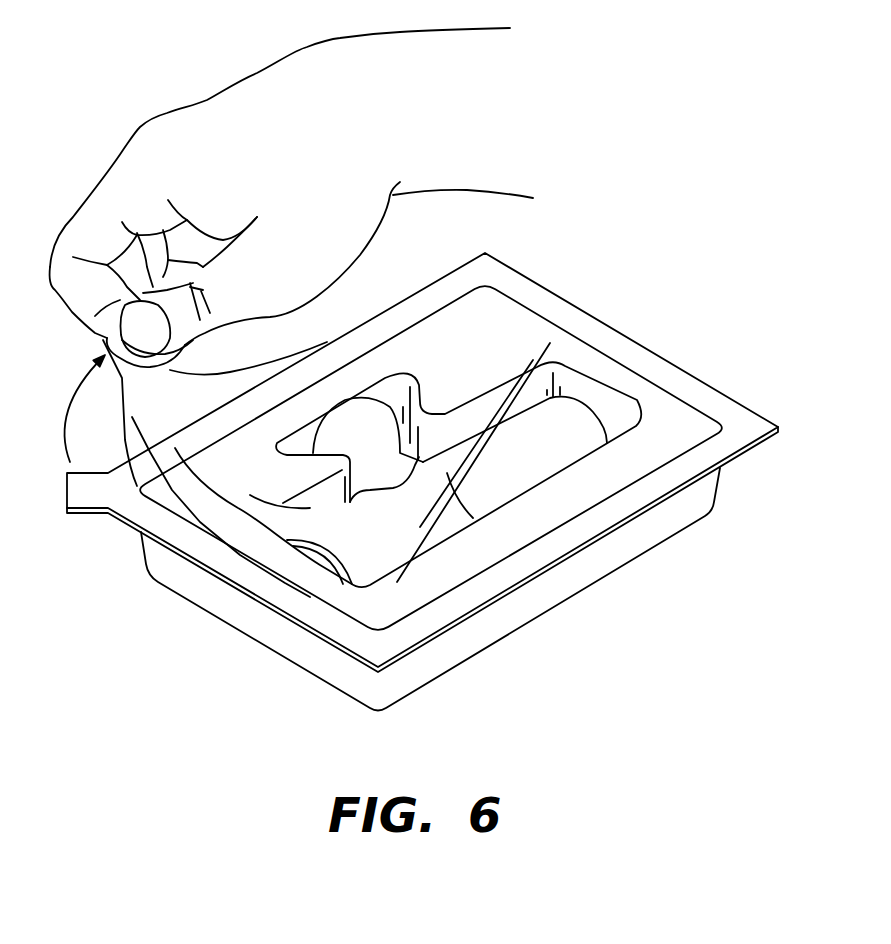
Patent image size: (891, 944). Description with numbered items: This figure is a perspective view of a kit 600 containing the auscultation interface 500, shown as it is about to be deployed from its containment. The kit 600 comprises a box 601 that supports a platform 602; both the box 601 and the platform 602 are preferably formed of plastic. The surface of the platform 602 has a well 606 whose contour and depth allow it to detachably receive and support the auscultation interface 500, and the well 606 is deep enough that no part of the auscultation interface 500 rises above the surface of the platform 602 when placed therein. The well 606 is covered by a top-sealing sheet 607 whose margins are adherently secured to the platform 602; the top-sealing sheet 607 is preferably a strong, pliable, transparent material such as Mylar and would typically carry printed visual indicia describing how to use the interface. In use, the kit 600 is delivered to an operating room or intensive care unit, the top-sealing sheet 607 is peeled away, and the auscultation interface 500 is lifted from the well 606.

The kit 600 is at (695, 297).
The box 601 is at (160, 562).
The platform 602 is at (533, 330).
The well 606 is at (460, 428).
The top-sealing sheet 607 is at (177, 370).
The auscultation interface 500 is at (603, 421).